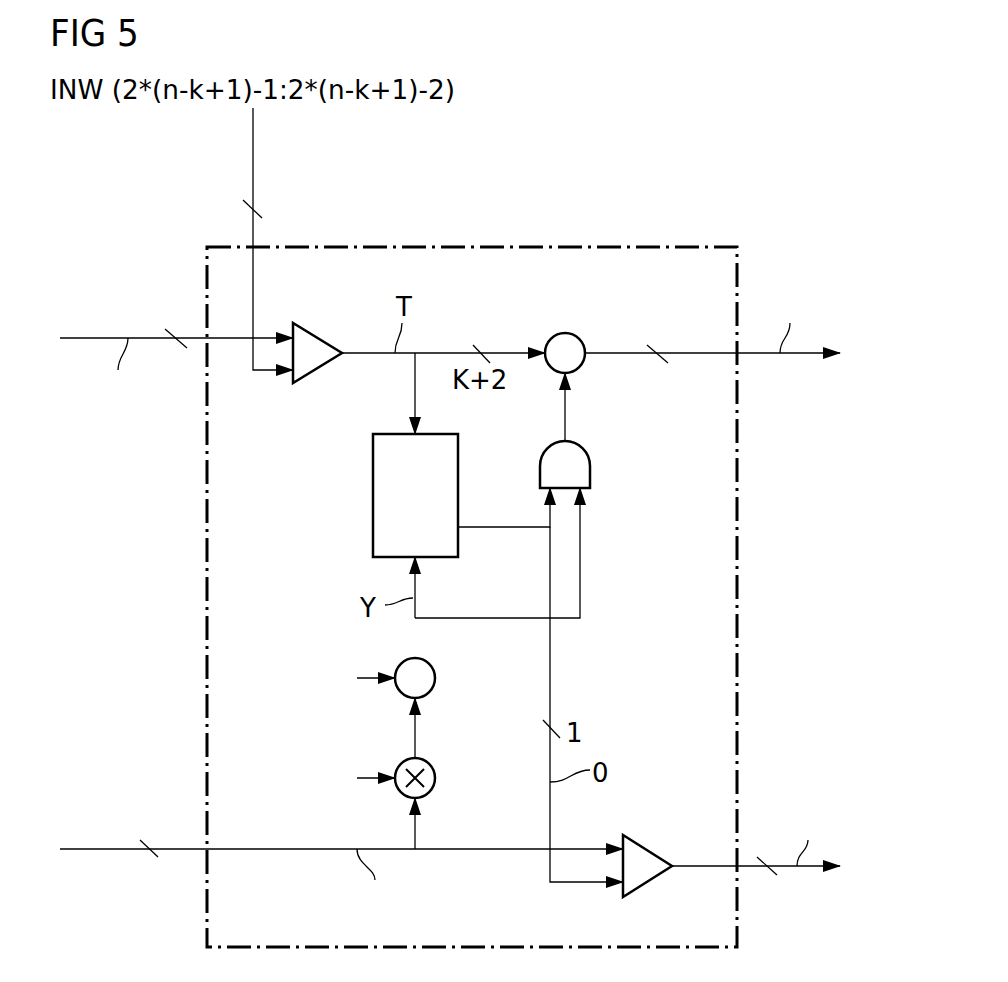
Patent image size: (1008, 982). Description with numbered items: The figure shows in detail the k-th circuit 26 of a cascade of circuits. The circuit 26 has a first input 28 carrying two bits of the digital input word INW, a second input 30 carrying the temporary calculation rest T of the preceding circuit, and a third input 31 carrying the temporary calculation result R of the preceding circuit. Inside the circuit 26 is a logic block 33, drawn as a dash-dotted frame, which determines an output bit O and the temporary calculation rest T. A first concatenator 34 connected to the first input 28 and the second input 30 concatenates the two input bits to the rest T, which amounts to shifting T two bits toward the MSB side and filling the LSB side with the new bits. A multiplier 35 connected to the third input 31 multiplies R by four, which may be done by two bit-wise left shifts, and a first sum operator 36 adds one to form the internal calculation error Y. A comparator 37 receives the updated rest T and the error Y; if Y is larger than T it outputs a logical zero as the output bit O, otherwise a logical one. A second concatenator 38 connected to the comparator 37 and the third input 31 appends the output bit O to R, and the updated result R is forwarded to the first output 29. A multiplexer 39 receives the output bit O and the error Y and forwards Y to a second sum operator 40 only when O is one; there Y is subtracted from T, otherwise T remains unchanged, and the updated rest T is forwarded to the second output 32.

The circuit 26 is at (792, 180).
The first input 28 is at (253, 160).
The first output 29 is at (825, 858).
The second input 30 is at (93, 338).
The third input 31 is at (88, 849).
The second output 32 is at (822, 345).
The logic block 33 is at (737, 633).
The first concatenator 34 is at (325, 337).
The multiplier 35 is at (437, 777).
The first sum operator 36 is at (437, 677).
The comparator 37 is at (372, 495).
The second concatenator 38 is at (650, 846).
The multiplexer 39 is at (592, 470).
The second sum operator 40 is at (568, 333).